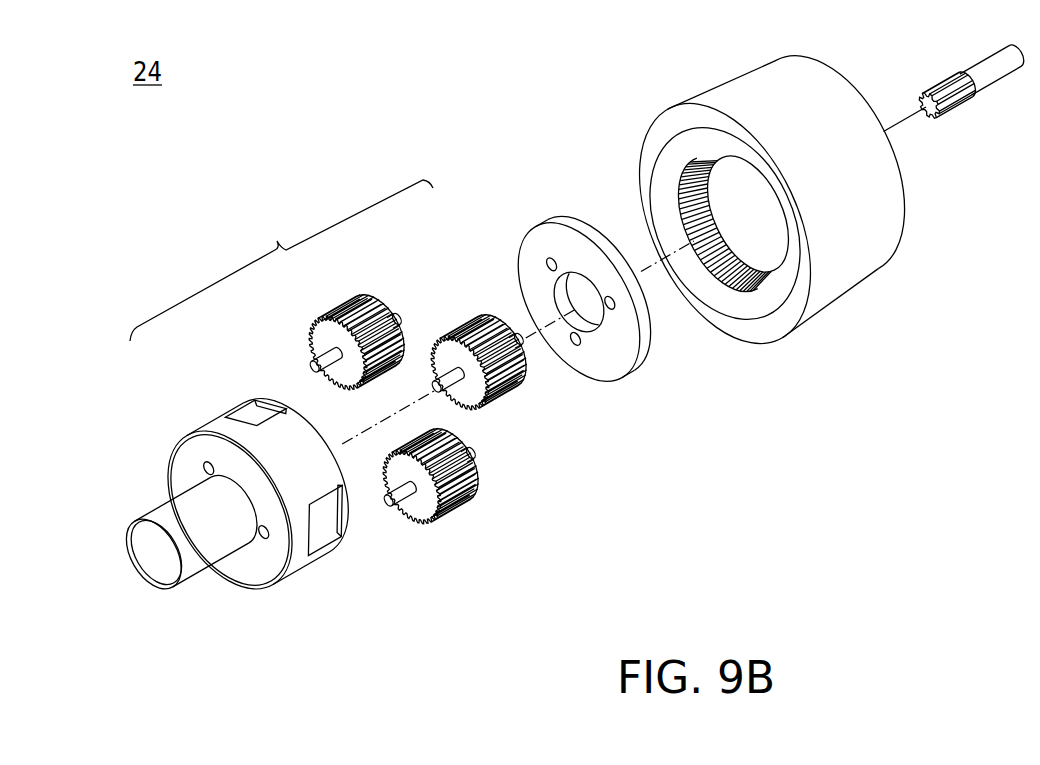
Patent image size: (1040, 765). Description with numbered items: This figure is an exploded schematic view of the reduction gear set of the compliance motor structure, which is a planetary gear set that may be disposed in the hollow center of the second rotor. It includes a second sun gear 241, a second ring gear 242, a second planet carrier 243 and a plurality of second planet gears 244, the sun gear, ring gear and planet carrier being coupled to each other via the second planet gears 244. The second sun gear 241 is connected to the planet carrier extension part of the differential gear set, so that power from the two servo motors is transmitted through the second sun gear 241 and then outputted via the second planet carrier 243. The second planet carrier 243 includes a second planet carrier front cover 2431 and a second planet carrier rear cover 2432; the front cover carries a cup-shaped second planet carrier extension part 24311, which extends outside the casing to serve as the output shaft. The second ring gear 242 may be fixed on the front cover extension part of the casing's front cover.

The second sun gear 241 is at (990, 72).
The second ring gear 242 is at (735, 88).
The second planet carrier 243 is at (281, 260).
The second planet carrier front cover 2431 is at (222, 427).
The second planet carrier extension part 24311 is at (172, 513).
The second planet carrier rear cover 2432 is at (558, 243).
The second planet gears 244 is at (372, 303).